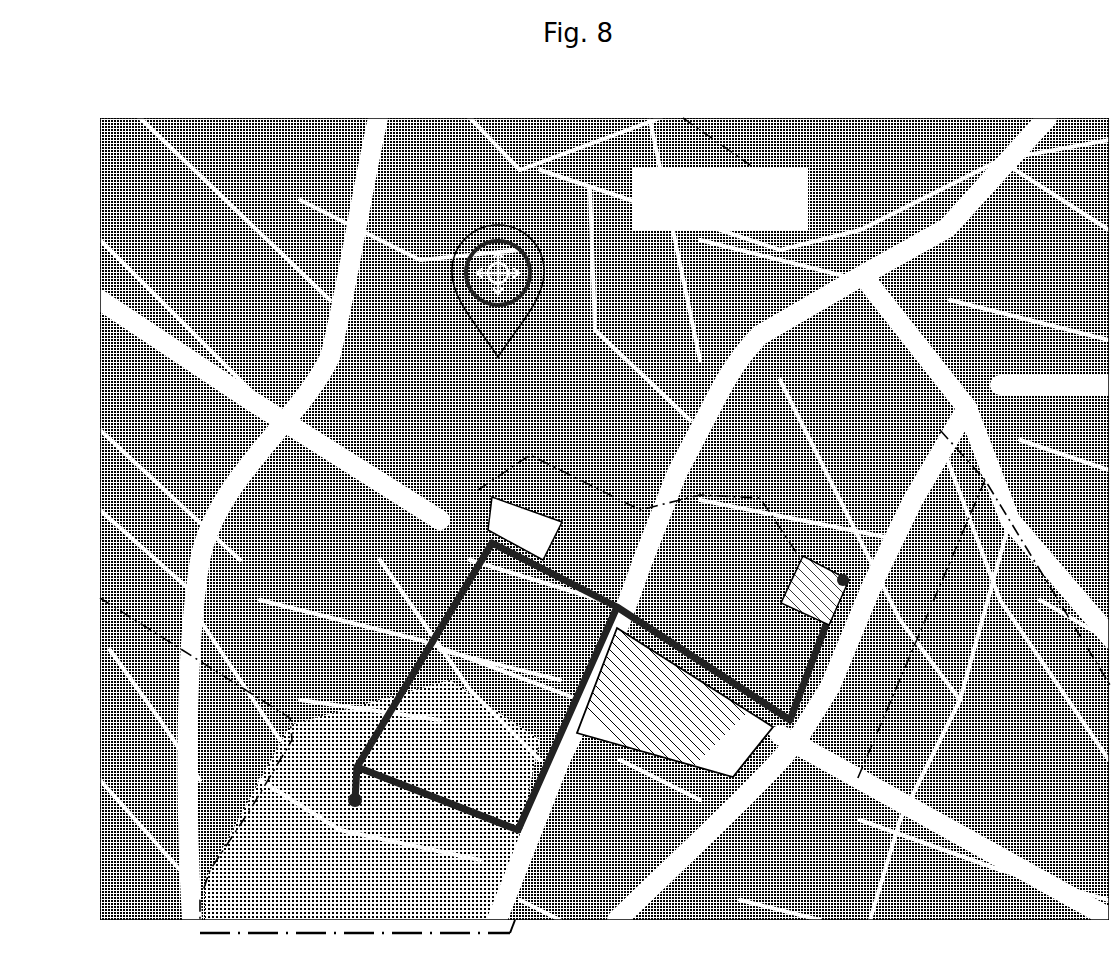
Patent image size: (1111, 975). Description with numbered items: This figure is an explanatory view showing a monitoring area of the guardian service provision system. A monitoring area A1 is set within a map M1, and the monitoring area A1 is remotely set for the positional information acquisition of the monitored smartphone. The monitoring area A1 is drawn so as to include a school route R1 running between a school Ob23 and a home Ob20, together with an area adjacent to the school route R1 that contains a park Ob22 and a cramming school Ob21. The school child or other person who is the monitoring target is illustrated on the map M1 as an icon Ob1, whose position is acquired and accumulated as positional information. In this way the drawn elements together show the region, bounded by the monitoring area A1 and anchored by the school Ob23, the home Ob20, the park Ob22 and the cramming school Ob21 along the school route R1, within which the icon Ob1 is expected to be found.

The map M1 is at (135, 240).
The icon Ob1 is at (455, 275).
The home Ob20 is at (790, 582).
The cramming school Ob21 is at (497, 515).
The park Ob22 is at (757, 767).
The school Ob23 is at (293, 830).
The school route R1 is at (430, 640).
The monitoring area A1 is at (100, 598).